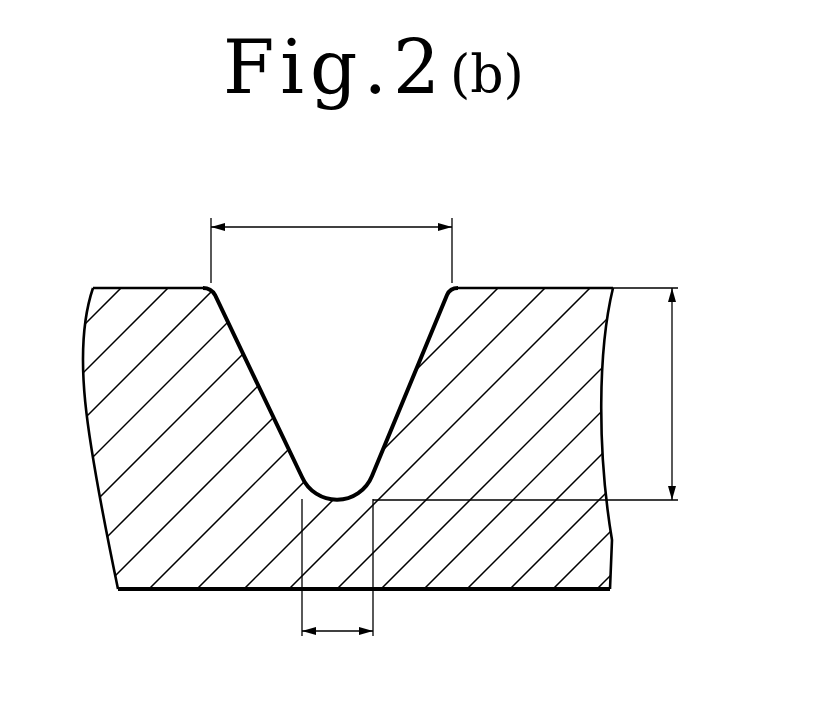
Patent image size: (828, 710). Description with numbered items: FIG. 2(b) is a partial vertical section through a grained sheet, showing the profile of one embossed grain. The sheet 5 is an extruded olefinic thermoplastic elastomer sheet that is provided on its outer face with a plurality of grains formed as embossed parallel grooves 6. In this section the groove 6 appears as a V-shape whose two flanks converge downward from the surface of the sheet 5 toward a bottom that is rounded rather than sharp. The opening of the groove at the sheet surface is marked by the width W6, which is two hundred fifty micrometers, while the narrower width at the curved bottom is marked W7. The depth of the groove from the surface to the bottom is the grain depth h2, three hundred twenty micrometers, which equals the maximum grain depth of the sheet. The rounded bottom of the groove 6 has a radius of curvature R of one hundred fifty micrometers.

The sheet 5 is at (532, 288).
The grooves 6 is at (324, 350).
The groove opening width W6 is at (331, 228).
The groove bottom width W7 is at (337, 592).
The grain depth h2 is at (547, 394).
The radius of curvature at the bottom R is at (335, 497).